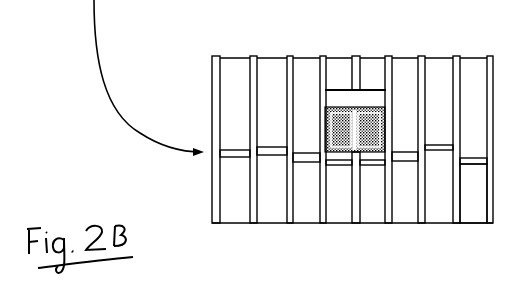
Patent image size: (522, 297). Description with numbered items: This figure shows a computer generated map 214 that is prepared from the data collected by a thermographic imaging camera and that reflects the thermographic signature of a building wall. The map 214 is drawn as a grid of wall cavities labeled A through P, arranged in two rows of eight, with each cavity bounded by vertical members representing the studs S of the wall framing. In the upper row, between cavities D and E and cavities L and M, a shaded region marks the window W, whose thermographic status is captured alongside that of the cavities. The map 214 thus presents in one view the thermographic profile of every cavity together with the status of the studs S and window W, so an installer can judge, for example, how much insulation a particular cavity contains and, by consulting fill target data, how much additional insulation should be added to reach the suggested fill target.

The computer generated map 214 is at (432, 33).
The window W is at (337, 136).
The studs S is at (458, 204).